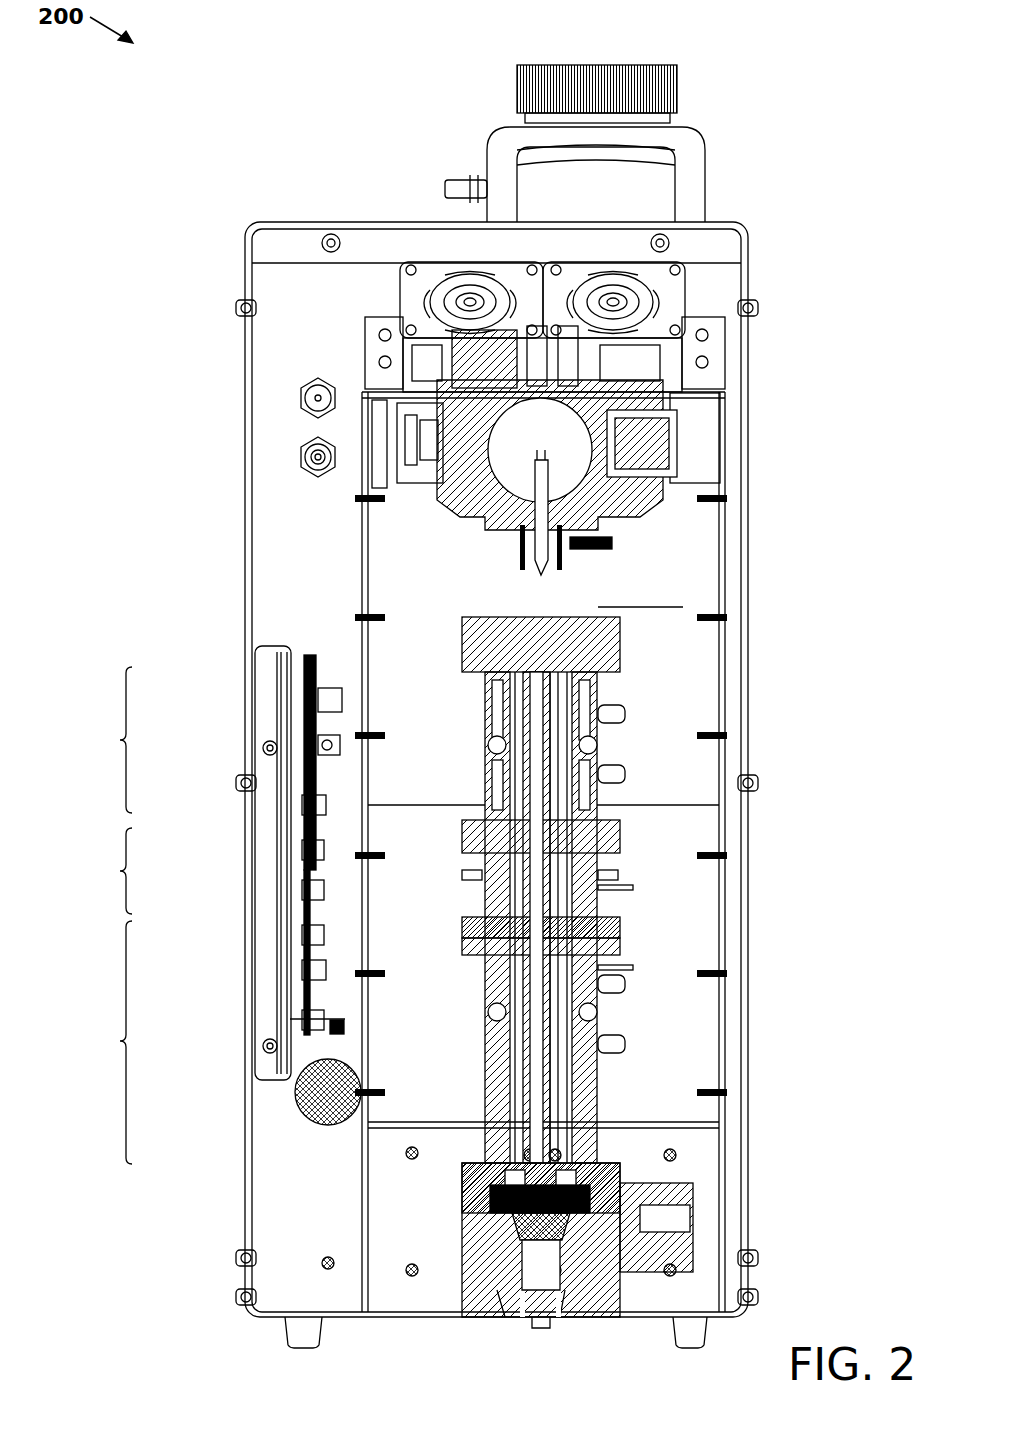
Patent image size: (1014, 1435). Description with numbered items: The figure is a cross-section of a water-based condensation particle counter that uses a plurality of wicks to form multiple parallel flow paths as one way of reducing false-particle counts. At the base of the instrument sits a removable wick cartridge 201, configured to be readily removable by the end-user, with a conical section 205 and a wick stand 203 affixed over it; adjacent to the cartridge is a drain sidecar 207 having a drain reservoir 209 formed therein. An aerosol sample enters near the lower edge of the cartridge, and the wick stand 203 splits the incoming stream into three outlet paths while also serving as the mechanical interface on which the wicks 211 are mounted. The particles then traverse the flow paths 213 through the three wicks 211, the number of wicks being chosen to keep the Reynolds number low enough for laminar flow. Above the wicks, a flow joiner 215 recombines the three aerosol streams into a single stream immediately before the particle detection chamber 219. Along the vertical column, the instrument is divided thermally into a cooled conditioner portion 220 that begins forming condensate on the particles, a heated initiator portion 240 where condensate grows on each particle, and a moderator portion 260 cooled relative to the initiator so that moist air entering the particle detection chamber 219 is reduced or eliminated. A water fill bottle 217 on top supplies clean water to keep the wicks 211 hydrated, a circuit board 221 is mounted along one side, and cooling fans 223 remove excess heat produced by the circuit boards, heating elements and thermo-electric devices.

The removable wick cartridge 201 is at (513, 1273).
The wick stand 203 is at (507, 1210).
The conical section 205 is at (555, 1237).
The drain sidecar 207 is at (690, 1245).
The drain reservoir 209 is at (640, 1222).
The wicks 211 is at (562, 818).
The flow paths 213 is at (558, 757).
The flow joiner 215 is at (577, 528).
The water fill bottle 217 is at (705, 188).
The particle detection chamber 219 is at (572, 425).
The conditioner portion 220 is at (101, 1042).
The circuit boards 221 is at (283, 640).
The cooling fans 223 is at (605, 265).
The initiator portion 240 is at (101, 871).
The moderator portion 260 is at (101, 740).